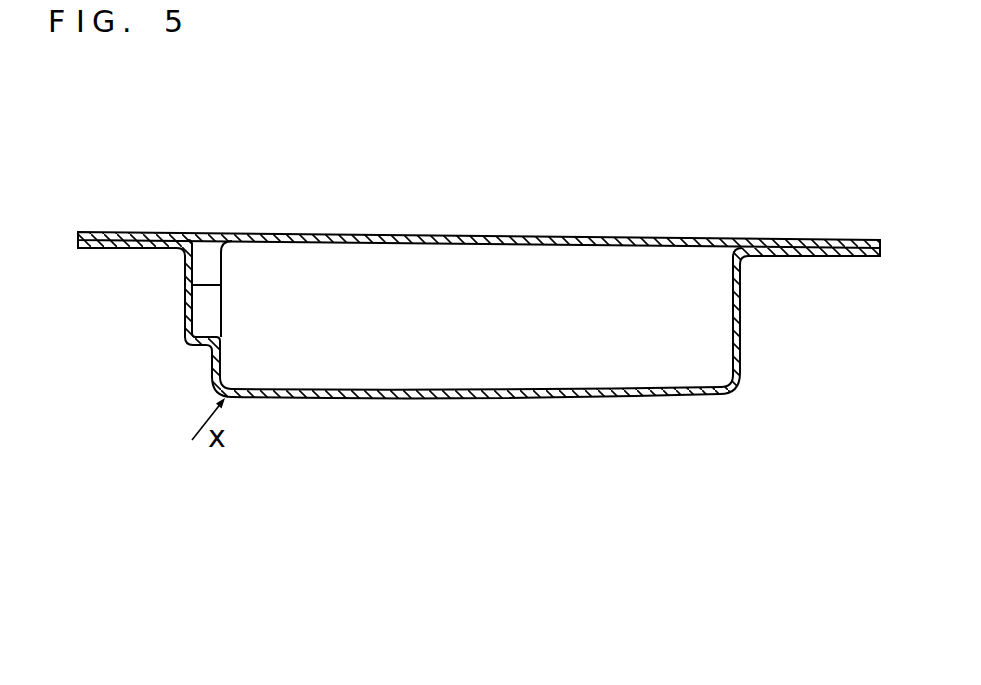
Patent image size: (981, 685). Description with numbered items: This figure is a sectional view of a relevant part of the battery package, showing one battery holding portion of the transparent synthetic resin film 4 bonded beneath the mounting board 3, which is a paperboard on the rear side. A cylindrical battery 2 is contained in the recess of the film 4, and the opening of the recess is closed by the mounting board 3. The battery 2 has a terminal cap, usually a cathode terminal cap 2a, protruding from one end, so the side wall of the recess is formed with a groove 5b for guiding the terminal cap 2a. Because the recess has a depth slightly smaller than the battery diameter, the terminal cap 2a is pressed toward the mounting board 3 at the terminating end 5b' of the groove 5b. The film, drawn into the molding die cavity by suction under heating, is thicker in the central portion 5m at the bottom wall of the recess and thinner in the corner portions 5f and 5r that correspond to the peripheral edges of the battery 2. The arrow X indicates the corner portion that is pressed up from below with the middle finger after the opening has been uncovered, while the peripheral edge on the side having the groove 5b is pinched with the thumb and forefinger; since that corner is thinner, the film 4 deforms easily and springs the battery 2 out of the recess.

The cylindrical battery 2 is at (545, 290).
The cathode terminal cap 2a is at (200, 302).
The mounting board 3 is at (651, 235).
The transparent synthetic resin film 4 is at (797, 251).
The groove 5b is at (160, 246).
The terminating end of the groove 5b' is at (151, 349).
The corner portion 5f is at (212, 381).
The central portion 5m is at (490, 396).
The corner portion 5r is at (730, 391).